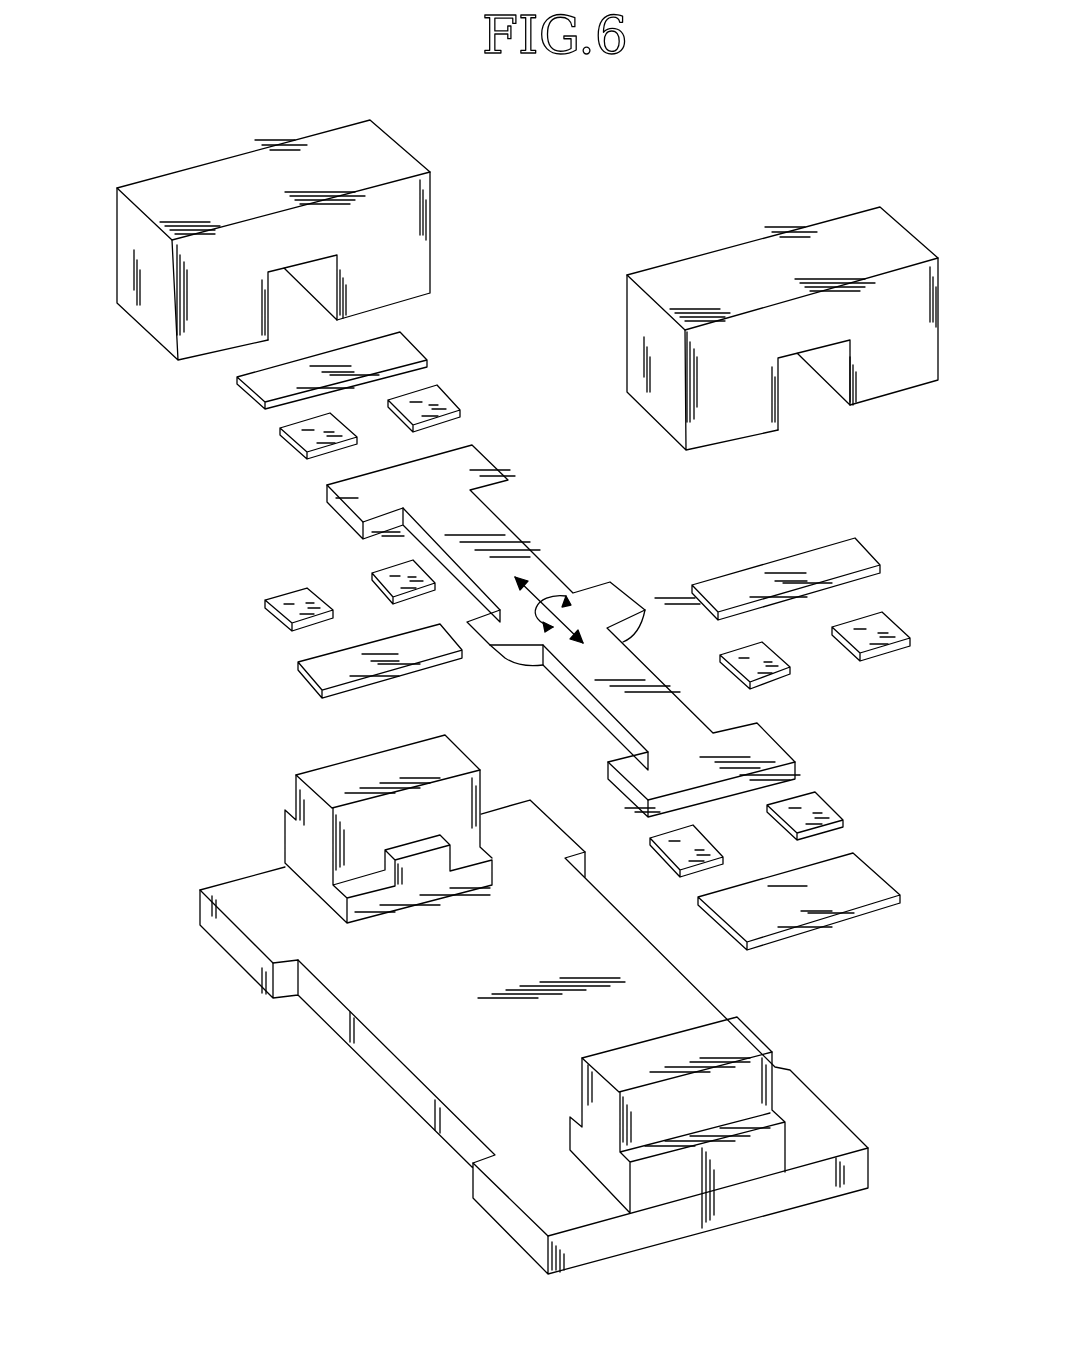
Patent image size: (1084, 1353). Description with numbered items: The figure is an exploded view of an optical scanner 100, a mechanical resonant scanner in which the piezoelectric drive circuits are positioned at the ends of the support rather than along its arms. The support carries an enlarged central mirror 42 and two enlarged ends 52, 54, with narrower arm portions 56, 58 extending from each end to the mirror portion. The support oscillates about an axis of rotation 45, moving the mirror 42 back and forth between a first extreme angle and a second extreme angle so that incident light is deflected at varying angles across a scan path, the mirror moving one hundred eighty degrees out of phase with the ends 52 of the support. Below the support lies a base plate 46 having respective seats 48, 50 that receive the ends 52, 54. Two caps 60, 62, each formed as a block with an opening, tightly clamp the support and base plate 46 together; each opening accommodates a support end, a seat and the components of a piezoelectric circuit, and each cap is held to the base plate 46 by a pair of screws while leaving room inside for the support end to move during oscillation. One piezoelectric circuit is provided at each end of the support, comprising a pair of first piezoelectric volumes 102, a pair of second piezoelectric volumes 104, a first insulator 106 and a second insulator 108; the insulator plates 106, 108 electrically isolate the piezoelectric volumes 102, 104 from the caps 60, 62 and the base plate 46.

The optical scanner 100 is at (822, 88).
The mirror 42 is at (563, 631).
The axis of rotation 45 is at (533, 592).
The base plate 46 is at (383, 1057).
The seat 48 is at (582, 1080).
The seat 50 is at (481, 834).
The end of the support 52 is at (675, 766).
The end of the support 54 is at (402, 494).
The arm portion 56 is at (637, 673).
The arm portion 58 is at (500, 530).
The cap 60 is at (842, 227).
The cap 62 is at (394, 153).
The first piezoelectric volume 102 is at (288, 443).
The second piezoelectric volume 104 is at (443, 402).
The first insulator 106 is at (420, 350).
The second insulator 108 is at (375, 672).